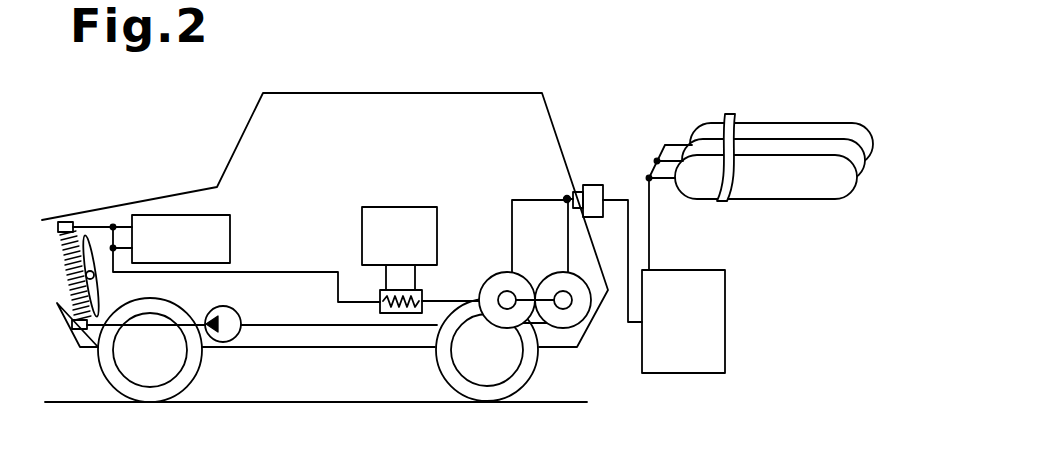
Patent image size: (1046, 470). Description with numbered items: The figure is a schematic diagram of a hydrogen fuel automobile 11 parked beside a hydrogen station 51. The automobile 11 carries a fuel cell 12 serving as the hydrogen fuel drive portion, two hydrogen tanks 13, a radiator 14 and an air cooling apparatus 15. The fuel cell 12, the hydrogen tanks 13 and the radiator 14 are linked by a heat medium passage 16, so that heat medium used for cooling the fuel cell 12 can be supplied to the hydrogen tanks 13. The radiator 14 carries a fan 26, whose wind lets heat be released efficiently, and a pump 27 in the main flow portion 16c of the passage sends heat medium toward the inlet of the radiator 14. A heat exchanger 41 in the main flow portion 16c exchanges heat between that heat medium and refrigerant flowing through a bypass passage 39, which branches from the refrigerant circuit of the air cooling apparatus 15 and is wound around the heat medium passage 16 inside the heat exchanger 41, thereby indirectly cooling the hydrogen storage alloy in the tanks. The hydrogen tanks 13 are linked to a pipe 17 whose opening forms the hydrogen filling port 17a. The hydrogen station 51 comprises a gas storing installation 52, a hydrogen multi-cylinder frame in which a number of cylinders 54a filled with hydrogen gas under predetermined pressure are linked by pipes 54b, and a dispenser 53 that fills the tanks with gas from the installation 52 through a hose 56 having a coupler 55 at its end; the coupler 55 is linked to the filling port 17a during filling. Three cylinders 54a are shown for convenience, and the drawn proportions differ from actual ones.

The hydrogen fuel automobile 11 is at (233, 138).
The fuel cell 12 is at (230, 238).
The hydrogen tanks 13 is at (527, 283).
The radiator 14 is at (65, 220).
The air cooling apparatus 15 is at (398, 207).
The heat medium passage 16 is at (282, 272).
The main flow portion 16c is at (325, 323).
The pipe 17 is at (512, 220).
The hydrogen filling port 17a is at (566, 198).
The fan 26 is at (100, 247).
The pump 27 is at (258, 303).
The bypass passage 39 is at (415, 277).
The heat exchanger 41 is at (380, 291).
The hydrogen station 51 is at (725, 75).
The gas storing installation 52 is at (782, 227).
The dispenser 53 is at (725, 320).
The cylinders 54a is at (813, 145).
The pipes 54b is at (672, 143).
The coupler 55 is at (590, 185).
The hose 56 is at (637, 212).